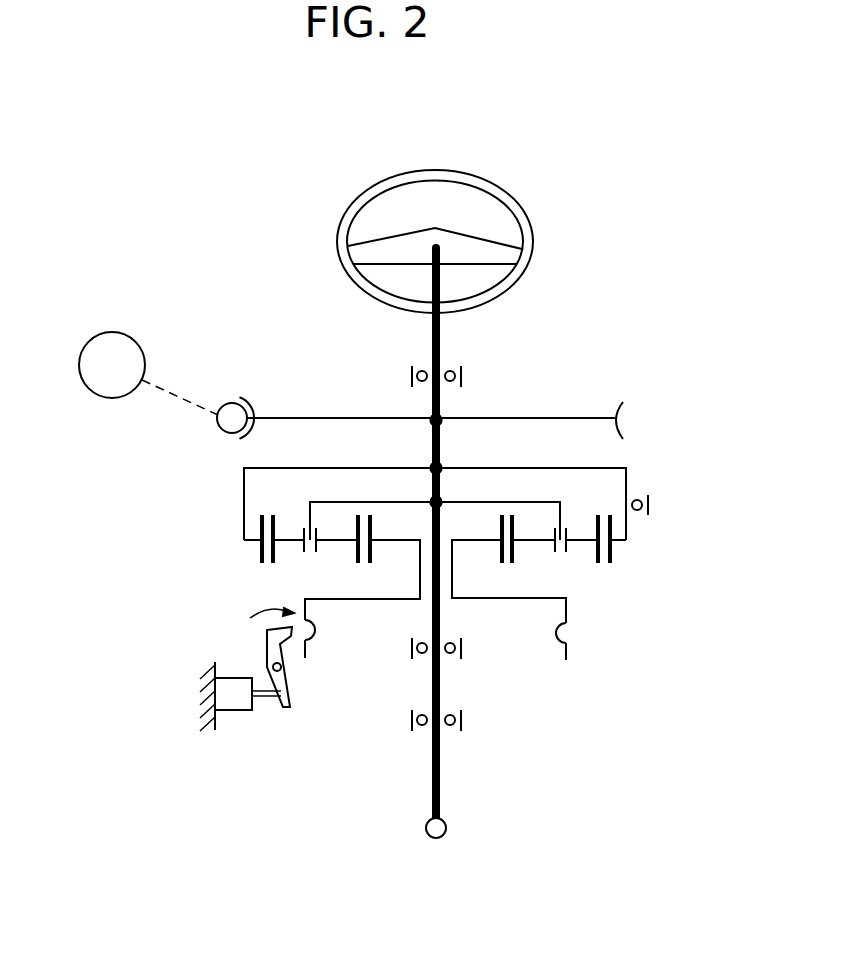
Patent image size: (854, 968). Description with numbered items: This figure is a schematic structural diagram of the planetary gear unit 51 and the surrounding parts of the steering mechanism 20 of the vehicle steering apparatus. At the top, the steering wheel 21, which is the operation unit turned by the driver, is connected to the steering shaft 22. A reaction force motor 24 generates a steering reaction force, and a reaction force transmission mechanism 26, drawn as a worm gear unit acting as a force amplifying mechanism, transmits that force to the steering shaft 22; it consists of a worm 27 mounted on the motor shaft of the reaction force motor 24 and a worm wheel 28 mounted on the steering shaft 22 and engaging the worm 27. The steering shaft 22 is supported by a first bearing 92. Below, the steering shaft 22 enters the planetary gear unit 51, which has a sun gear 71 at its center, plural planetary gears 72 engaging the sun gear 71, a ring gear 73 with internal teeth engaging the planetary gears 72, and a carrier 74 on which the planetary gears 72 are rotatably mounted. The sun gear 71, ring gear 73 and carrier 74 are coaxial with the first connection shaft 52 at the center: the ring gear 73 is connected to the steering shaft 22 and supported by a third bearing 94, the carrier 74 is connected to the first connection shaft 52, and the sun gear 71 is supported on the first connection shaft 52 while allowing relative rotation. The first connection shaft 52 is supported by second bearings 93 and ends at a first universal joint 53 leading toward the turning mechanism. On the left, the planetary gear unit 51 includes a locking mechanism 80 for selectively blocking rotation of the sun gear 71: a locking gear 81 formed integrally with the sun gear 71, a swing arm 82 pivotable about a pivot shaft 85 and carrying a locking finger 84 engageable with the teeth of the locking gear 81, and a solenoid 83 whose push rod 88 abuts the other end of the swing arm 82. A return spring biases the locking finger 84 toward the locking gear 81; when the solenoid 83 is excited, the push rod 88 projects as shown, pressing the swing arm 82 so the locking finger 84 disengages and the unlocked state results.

The steering mechanism 20 is at (186, 163).
The steering wheel 21 is at (485, 188).
The steering shaft 22 is at (441, 331).
The reaction force motor 24 is at (110, 343).
The reaction force transmission mechanism 26 is at (300, 290).
The worm 27 is at (236, 402).
The worm wheel 28 is at (295, 418).
The planetary gear unit 51 is at (641, 462).
The first connection shaft 52 is at (441, 783).
The first universal joint 53 is at (446, 830).
The sun gear 71 is at (482, 541).
The planetary gears 72 is at (337, 541).
The ring gear 73 is at (626, 525).
The carrier 74 is at (537, 502).
The locking mechanism 80 is at (347, 846).
The locking gear 81 is at (315, 638).
The swing arm 82 is at (290, 708).
The solenoid 83 is at (233, 712).
The locking finger 84 is at (282, 630).
The pivot shaft 85 is at (265, 652).
The push rod 88 is at (260, 698).
The first bearing 92 is at (462, 376).
The second bearings 93 is at (462, 648).
The third bearing 94 is at (648, 505).